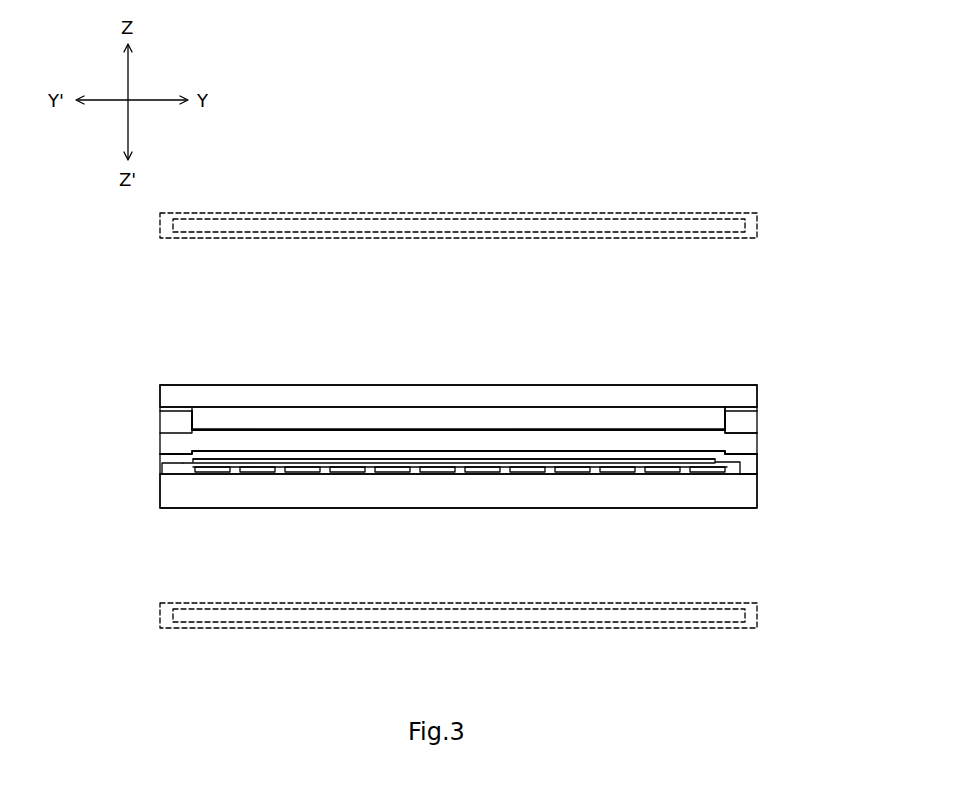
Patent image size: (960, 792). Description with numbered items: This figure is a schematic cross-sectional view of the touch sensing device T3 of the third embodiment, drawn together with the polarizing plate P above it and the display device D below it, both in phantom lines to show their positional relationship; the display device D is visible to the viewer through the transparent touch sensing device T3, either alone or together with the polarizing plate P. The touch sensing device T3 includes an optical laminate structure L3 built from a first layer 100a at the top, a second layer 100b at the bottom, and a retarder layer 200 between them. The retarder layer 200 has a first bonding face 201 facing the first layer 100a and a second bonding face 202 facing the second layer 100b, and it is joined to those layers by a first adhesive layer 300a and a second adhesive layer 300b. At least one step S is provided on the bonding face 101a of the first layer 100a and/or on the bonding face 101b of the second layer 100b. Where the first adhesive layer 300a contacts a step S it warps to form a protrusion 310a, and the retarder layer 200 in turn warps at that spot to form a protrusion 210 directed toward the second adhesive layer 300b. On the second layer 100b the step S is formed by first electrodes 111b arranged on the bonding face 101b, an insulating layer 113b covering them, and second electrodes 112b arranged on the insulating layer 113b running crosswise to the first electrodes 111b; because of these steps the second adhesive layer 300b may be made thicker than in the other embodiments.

The first layer 100a is at (185, 407).
The second layer 100b is at (185, 490).
The bonding face of the first layer 101a is at (491, 407).
The bonding face of the second layer 101b is at (572, 474).
The first electrodes 111b is at (395, 474).
The second electrodes 112b is at (407, 460).
The insulating layer 113b is at (640, 467).
The retarder layer 200 is at (185, 455).
The first bonding face 201 is at (302, 429).
The second bonding face 202 is at (283, 462).
The protrusion 210 is at (185, 451).
The first adhesive layer 300a is at (737, 420).
The second adhesive layer 300b is at (748, 463).
The protrusion 310a is at (192, 432).
The step S is at (183, 408).
The touch sensing device T3 is at (172, 374).
The optical laminate structure L3 is at (578, 385).
The polarizing plate P is at (160, 222).
The display device D is at (160, 612).